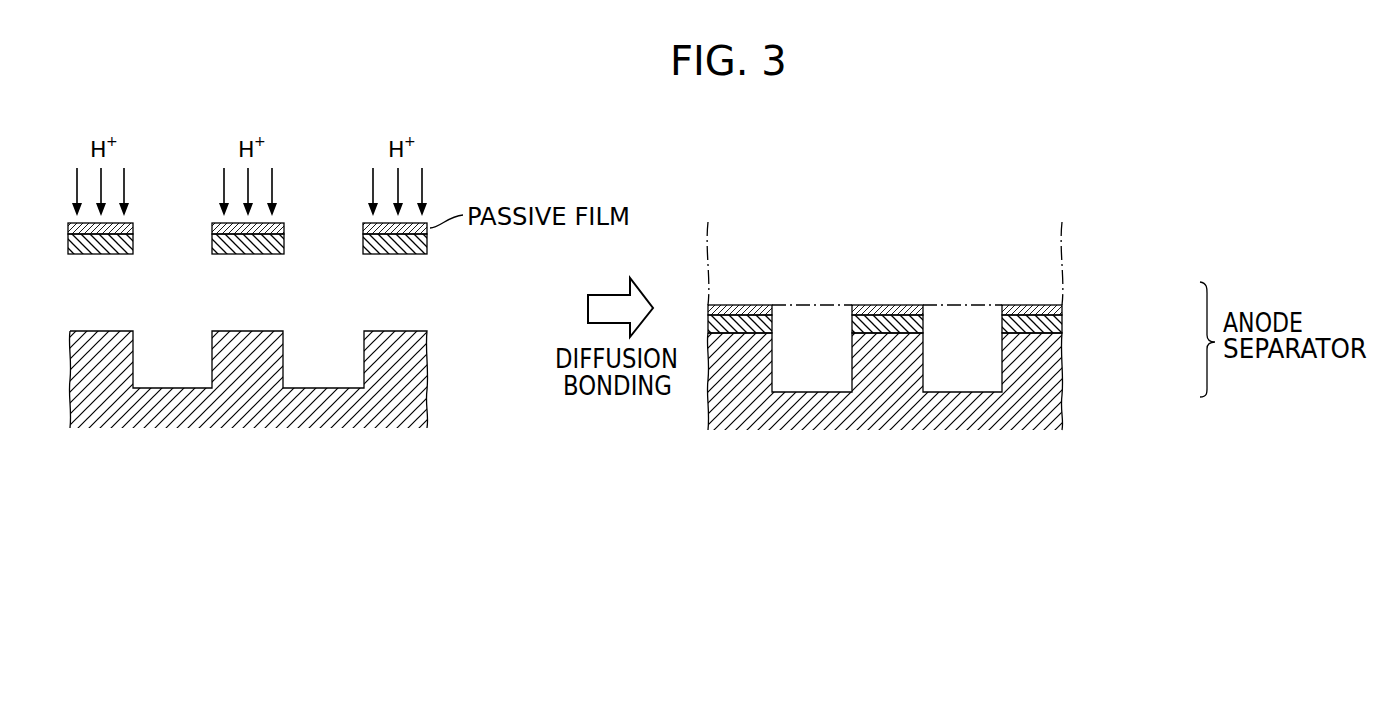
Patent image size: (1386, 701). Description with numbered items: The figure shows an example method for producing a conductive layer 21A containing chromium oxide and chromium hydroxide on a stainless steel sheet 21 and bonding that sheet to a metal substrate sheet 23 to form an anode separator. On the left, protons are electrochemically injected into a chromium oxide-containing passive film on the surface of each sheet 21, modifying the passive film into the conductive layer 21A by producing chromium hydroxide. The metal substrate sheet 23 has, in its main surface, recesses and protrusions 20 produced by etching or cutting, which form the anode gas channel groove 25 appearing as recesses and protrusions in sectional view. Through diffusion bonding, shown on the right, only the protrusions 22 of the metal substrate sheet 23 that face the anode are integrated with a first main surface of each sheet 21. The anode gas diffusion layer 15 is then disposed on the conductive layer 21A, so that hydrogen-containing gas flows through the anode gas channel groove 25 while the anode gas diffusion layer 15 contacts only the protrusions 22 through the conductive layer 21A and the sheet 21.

The recesses and protrusions 20 is at (884, 413).
The sheet 21 is at (429, 243).
The conductive layer 21A is at (1065, 310).
The protrusions 22 is at (114, 372).
The metal substrate sheet 23 is at (428, 390).
The anode gas channel groove 25 is at (186, 372).
The anode gas diffusion layer 15 is at (1064, 250).